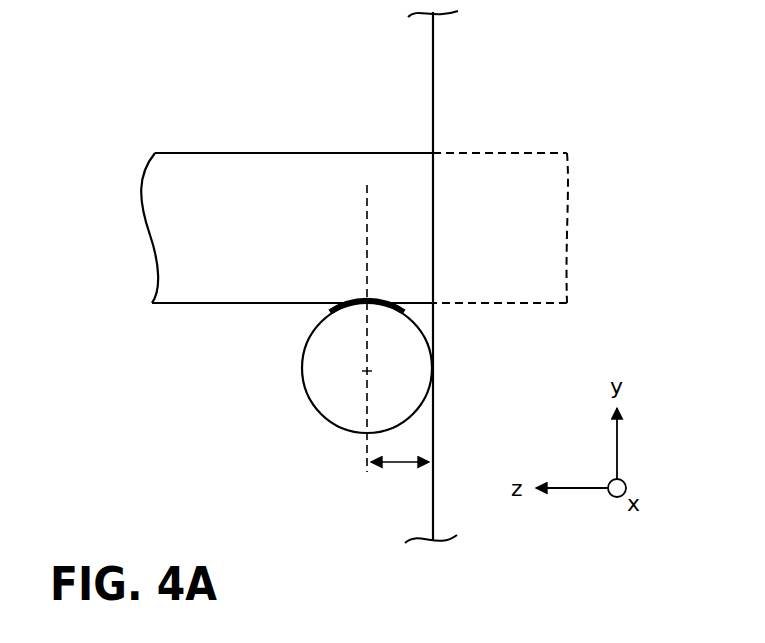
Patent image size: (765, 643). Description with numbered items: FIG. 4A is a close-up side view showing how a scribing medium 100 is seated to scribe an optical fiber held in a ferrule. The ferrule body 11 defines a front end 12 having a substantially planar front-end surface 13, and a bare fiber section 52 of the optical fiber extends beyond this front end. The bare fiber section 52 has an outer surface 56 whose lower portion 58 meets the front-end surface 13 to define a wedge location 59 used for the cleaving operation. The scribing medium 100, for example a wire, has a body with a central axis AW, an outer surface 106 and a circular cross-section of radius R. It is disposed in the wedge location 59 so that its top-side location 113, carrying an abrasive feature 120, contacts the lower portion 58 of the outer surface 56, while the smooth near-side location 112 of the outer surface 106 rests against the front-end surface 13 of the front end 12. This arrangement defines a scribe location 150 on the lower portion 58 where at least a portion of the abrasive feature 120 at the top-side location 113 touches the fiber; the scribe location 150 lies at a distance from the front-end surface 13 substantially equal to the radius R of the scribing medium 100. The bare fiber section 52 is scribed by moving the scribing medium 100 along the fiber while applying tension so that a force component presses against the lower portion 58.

The body 11 is at (527, 105).
The front end 12 is at (372, 83).
The front-end surface 13 is at (433, 80).
The bare fiber section 52 is at (184, 132).
The outer surface 56 is at (337, 152).
The lower portion 58 is at (212, 304).
The wedge location 59 is at (327, 450).
The scribing medium 100 is at (287, 367).
The outer surface 106 is at (305, 395).
The near-side location 112 is at (440, 372).
The top-side location 113 is at (343, 294).
The abrasive feature 120 is at (378, 302).
The scribe location 150 is at (360, 292).
The central axis AW is at (370, 371).
The radius R is at (400, 479).